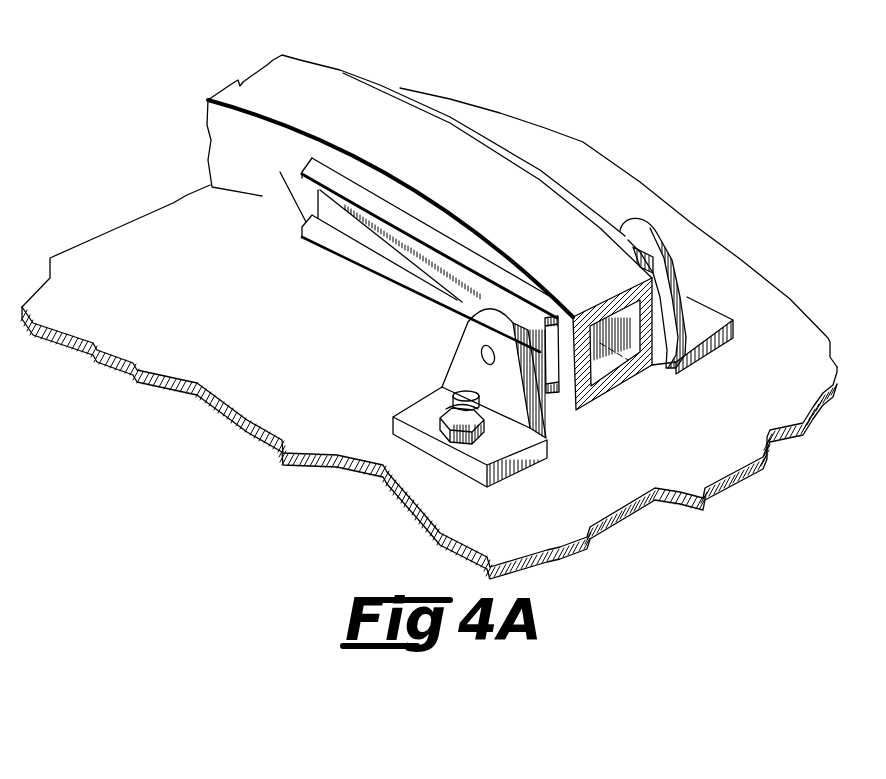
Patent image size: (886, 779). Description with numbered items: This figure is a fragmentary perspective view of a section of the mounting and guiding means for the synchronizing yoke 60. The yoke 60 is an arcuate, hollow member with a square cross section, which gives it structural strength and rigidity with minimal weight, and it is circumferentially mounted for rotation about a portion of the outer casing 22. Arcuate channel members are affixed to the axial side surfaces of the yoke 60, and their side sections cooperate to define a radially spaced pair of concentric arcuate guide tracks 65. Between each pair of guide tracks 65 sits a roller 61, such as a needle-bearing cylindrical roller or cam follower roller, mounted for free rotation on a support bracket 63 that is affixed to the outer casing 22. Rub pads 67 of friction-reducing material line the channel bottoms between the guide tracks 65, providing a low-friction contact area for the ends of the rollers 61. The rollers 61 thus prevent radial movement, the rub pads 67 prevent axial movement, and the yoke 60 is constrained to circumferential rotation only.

The outer casing 22 is at (583, 141).
The yoke 60 is at (340, 72).
The roller 61 is at (553, 372).
The support bracket 63 is at (450, 360).
The guide tracks 65 is at (302, 172).
The rub pads 67 is at (370, 231).